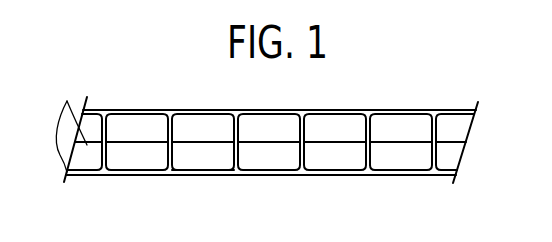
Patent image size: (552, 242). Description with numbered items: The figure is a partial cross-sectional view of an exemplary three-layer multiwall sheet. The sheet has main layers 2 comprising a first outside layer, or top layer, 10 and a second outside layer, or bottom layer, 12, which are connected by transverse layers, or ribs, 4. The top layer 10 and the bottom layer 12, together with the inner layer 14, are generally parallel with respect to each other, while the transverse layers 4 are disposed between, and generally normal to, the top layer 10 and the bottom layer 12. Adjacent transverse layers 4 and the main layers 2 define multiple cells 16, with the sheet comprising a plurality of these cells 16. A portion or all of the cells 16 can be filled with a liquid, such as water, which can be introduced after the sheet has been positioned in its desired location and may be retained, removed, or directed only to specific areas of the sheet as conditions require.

The main layers 2 is at (137, 113).
The first outside layer 10 is at (260, 113).
The second outside layer 12 is at (398, 175).
The inner layer 14 is at (466, 140).
The cells 16 is at (197, 171).
The transverse layers 4 is at (373, 130).